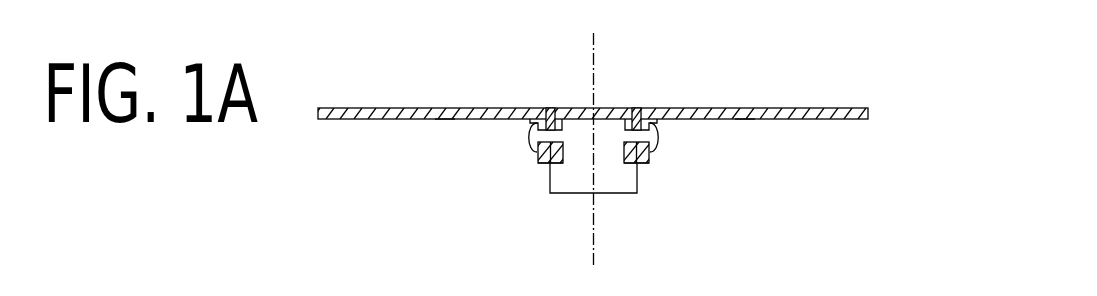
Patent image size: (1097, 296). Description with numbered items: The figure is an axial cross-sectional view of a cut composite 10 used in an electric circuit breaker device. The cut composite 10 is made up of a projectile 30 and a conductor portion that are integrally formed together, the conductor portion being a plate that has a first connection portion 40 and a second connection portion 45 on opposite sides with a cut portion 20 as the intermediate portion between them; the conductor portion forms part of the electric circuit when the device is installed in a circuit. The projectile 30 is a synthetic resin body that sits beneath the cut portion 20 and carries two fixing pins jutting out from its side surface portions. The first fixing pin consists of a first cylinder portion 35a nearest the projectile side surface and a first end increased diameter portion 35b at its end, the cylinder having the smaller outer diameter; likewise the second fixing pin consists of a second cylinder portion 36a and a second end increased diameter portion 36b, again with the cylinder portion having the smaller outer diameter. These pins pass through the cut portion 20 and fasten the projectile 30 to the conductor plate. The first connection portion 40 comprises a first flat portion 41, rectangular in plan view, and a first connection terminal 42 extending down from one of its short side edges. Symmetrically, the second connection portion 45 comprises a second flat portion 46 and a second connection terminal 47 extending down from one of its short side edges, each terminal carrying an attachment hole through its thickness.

The cut composite 10 is at (484, 58).
The cut portion 20 is at (618, 100).
The projectile 30 is at (622, 197).
The first cylinder portion 35a is at (553, 135).
The first end increased diameter portion 35b is at (530, 136).
The second cylinder portion 36a is at (635, 137).
The second end increased diameter portion 36b is at (657, 142).
The first connection portion 40 is at (456, 217).
The first flat portion 41 is at (445, 120).
The first connection terminal 42 is at (535, 155).
The second connection portion 45 is at (817, 150).
The second flat portion 46 is at (745, 120).
The second connection terminal 47 is at (650, 157).